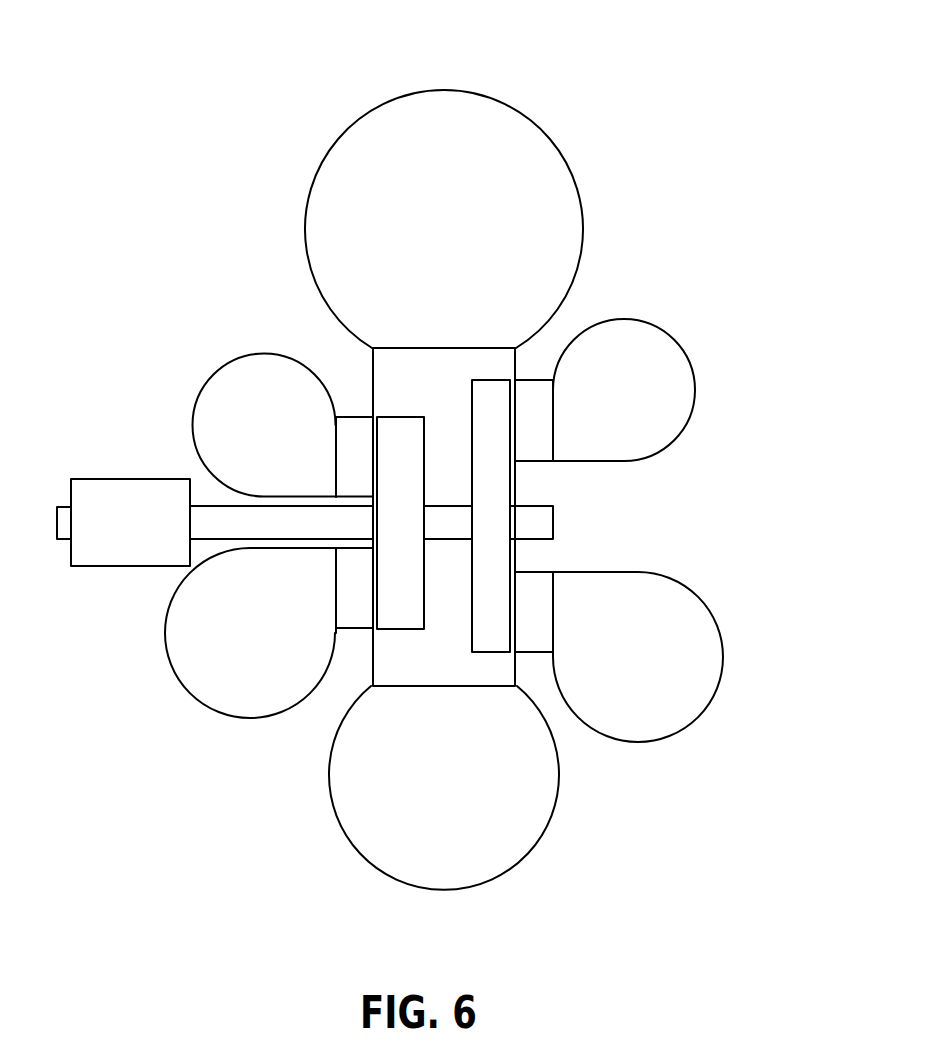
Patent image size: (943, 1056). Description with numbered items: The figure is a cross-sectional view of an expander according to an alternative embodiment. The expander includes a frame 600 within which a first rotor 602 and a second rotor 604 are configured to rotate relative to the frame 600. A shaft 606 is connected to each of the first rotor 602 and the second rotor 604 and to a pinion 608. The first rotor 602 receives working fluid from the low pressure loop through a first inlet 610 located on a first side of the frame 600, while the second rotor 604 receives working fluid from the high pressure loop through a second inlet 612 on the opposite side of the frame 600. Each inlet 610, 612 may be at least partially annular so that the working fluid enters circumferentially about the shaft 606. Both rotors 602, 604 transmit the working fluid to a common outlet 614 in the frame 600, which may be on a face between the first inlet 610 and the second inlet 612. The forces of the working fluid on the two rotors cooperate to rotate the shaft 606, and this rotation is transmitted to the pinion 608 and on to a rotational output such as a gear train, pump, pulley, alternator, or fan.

The frame 600 is at (372, 372).
The first rotor 602 is at (404, 630).
The second rotor 604 is at (492, 378).
The shaft 606 is at (553, 523).
The pinion 608 is at (99, 566).
The first inlet 610 is at (193, 422).
The second inlet 612 is at (680, 342).
The common outlet 614 is at (526, 113).